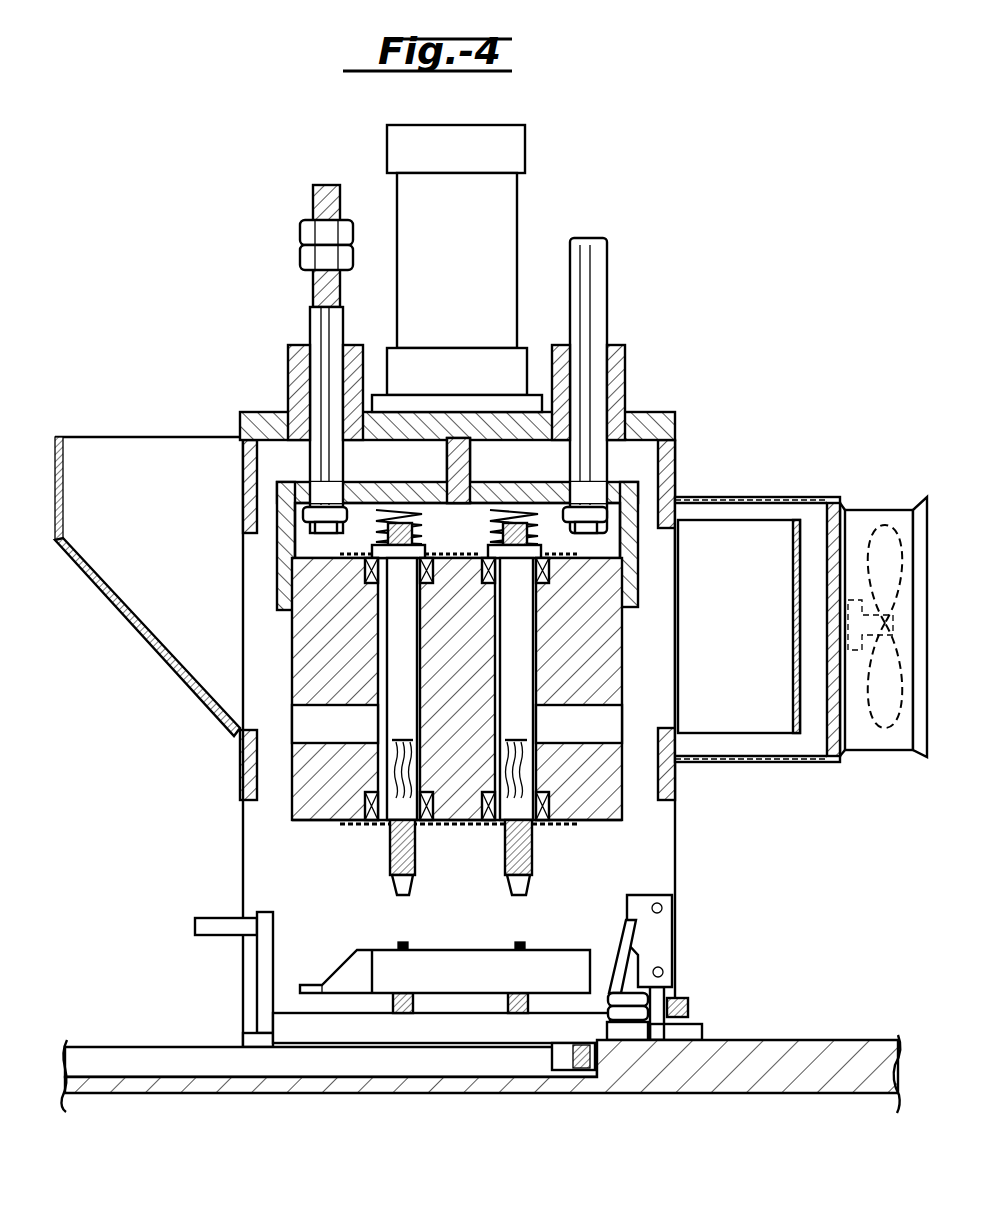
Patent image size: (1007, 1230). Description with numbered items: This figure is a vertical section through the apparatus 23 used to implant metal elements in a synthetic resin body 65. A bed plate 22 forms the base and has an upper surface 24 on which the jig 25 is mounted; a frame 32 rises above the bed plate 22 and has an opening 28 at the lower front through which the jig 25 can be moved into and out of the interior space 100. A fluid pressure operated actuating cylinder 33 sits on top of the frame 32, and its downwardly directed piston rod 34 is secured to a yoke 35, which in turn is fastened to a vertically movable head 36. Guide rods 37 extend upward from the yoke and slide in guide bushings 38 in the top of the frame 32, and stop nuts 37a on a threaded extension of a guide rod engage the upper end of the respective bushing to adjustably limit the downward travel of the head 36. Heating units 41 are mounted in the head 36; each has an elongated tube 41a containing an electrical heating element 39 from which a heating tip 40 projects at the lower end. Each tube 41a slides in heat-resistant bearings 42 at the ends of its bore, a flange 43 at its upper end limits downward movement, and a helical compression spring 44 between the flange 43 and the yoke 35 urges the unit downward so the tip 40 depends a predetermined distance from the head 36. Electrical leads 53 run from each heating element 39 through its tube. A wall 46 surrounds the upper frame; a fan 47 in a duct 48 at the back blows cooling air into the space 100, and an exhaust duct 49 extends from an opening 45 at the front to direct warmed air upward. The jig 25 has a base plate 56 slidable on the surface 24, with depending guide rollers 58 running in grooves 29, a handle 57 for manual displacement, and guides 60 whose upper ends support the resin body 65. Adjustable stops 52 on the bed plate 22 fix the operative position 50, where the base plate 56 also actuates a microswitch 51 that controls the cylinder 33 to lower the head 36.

The bed plate 22 is at (775, 1046).
The apparatus 23 is at (691, 378).
The upper surface 24 is at (150, 1047).
The jig 25 is at (258, 1010).
The opening 28 is at (243, 851).
The grooves 29 is at (362, 1078).
The frame 32 is at (675, 418).
The actuating cylinder 33 is at (507, 222).
The piston rod 34 is at (458, 430).
The yoke 35 is at (622, 490).
The head 36 is at (612, 650).
The guide rods 37 is at (308, 326).
The stop nuts 37a is at (300, 258).
The guide bushings 38 is at (288, 384).
The electrical heating element 39 is at (388, 851).
The heating tip 40 is at (397, 894).
The heating units 41 is at (422, 871).
The tube 41a is at (395, 868).
The bearings 42 is at (452, 570).
The flange 43 is at (345, 510).
The helical compression spring 44 is at (398, 515).
The opening 45 is at (248, 698).
The wall 46 is at (674, 484).
The fan 47 is at (886, 520).
The duct 48 is at (780, 497).
The exhaust duct 49 is at (131, 438).
The operative position 50 is at (470, 932).
The microswitch 51 is at (672, 934).
The adjustable stops 52 is at (610, 992).
The electrical leads 53 is at (392, 764).
The base plate 56 is at (290, 1020).
The handle 57 is at (195, 930).
The guide rollers 58 is at (574, 1072).
The guides 60 is at (502, 1014).
The synthetic resin body 65 is at (493, 954).
The interior space 100 is at (320, 884).